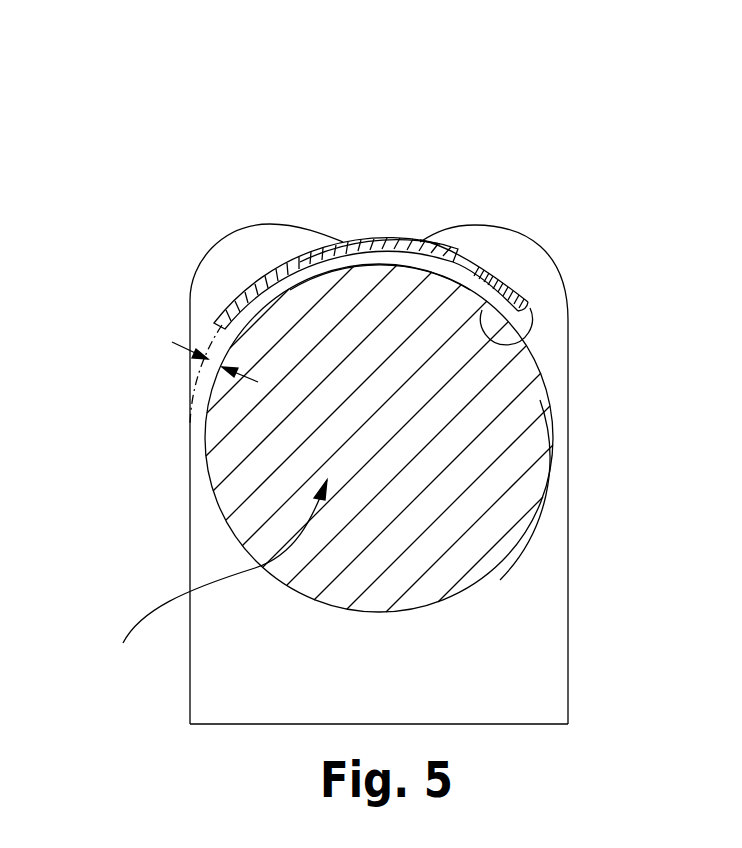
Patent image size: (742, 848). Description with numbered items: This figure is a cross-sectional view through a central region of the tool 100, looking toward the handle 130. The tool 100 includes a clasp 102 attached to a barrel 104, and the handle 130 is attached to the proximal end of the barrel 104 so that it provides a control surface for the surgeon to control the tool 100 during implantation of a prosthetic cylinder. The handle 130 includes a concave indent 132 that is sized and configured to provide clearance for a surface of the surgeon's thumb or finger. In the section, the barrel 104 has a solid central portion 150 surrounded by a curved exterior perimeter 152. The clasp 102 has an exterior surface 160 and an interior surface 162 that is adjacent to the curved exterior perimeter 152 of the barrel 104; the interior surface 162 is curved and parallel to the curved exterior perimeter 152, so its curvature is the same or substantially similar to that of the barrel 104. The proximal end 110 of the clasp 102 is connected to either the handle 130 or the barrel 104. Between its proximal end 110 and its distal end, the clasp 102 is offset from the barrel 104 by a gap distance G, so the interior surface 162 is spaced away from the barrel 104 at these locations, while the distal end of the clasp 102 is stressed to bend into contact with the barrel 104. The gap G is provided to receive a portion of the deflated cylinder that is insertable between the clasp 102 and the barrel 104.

The tool 100 is at (537, 120).
The clasp 102 is at (338, 237).
The barrel 104 is at (242, 481).
The proximal end 110 is at (393, 258).
The handle 130 is at (555, 384).
The concave indent 132 is at (373, 236).
The solid central portion 150 is at (207, 575).
The curved exterior perimeter 152 is at (535, 522).
The exterior surface 160 is at (462, 250).
The interior surface 162 is at (518, 350).
The gap distance G is at (172, 342).